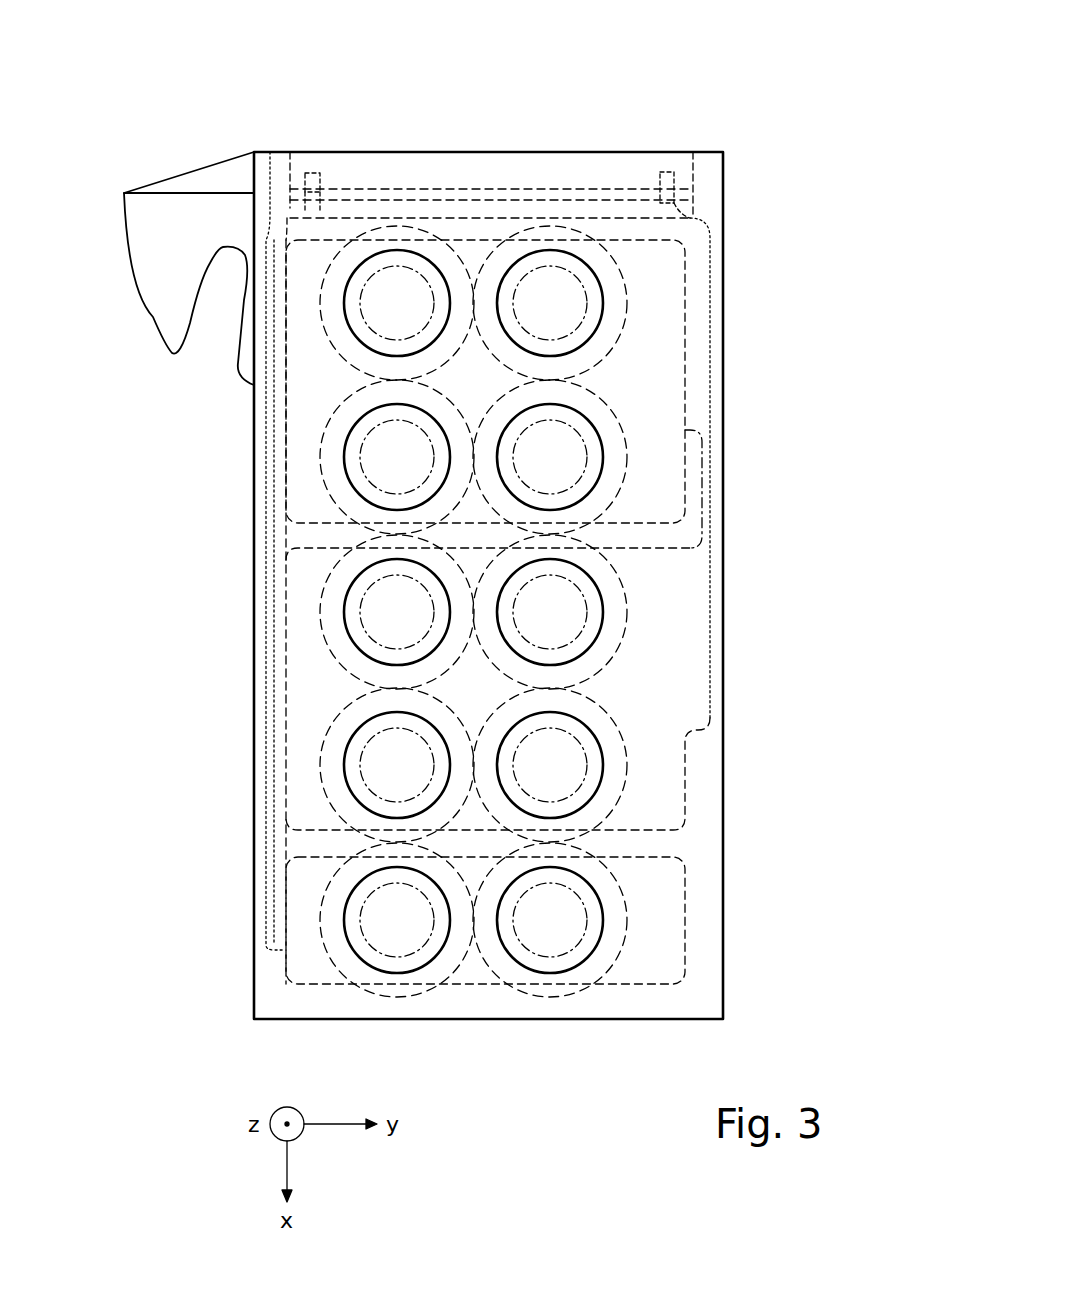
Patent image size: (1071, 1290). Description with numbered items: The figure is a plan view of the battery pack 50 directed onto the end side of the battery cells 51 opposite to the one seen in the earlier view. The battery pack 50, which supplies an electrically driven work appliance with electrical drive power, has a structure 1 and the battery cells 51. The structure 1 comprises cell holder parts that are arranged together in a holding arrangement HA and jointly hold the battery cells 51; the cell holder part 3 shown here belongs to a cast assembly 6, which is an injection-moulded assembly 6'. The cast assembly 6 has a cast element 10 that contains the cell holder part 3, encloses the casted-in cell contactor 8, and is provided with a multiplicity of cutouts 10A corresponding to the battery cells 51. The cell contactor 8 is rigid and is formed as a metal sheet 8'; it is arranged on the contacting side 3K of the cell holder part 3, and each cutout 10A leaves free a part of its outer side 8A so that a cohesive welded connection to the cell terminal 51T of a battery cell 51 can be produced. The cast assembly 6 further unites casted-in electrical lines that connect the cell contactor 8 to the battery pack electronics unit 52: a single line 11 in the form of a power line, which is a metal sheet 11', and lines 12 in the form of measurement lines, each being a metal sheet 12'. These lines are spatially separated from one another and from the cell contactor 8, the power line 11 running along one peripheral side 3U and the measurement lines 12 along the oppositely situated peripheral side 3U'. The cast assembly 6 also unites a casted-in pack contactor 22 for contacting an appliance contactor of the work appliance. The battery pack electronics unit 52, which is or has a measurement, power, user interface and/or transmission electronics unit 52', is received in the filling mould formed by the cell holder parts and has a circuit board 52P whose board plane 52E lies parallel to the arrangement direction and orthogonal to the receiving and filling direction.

The structure 1 is at (368, 116).
The battery pack 50 is at (300, 124).
The battery pack electronics unit 52 is at (491, 131).
The measurement, power, user interface and/or transmission electronics unit 52' is at (491, 131).
The circuit board 52P is at (606, 190).
The board plane 52E is at (708, 195).
The holding arrangement HA is at (764, 155).
The line 12 is at (780, 375).
The metal sheet 12' is at (780, 375).
The pack contactor 22 is at (153, 247).
The battery cell 51 is at (325, 428).
The cell terminal 51T is at (355, 468).
The line 11 is at (394, 400).
The metal sheet 11' is at (394, 400).
The outer side 8A is at (355, 608).
The cutout 10A is at (350, 634).
The cell contactor 8 is at (431, 612).
The metal sheet 8' is at (431, 612).
The cell holder part 3 is at (255, 770).
The peripheral side 3U is at (225, 551).
The peripheral side 3U' is at (767, 624).
The cast assembly 6 is at (417, 920).
The injection-moulded assembly 6' is at (417, 920).
The cast element 10 is at (285, 975).
The contacting side 3K is at (275, 1005).